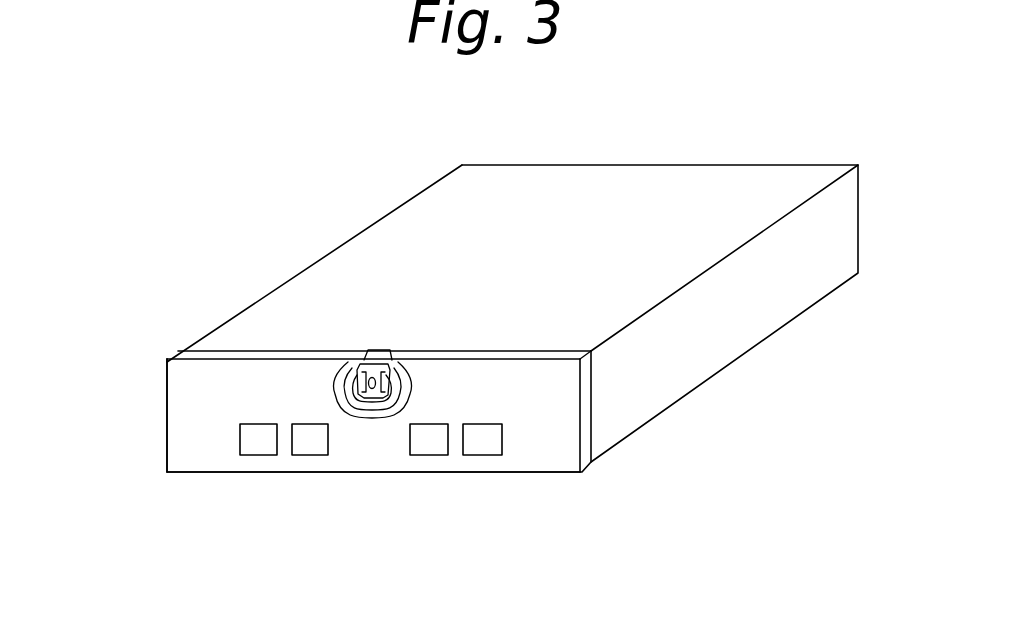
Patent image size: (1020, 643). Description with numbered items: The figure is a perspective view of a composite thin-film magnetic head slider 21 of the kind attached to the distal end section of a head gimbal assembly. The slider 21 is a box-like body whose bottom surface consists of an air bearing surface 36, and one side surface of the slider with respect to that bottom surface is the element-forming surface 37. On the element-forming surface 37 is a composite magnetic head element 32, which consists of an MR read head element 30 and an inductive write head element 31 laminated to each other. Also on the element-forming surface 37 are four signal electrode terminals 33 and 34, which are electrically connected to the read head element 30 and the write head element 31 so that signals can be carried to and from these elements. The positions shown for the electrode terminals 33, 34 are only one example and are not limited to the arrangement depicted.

The magnetic head slider 21 is at (647, 148).
The MR read head element 30 is at (352, 366).
The inductive write head element 31 is at (347, 373).
The composite magnetic head element 32 is at (372, 422).
The signal electrode terminal 33 is at (429, 445).
The signal electrode terminal 34 is at (310, 443).
The air bearing surface 36 is at (395, 252).
The element-forming surface 37 is at (213, 385).